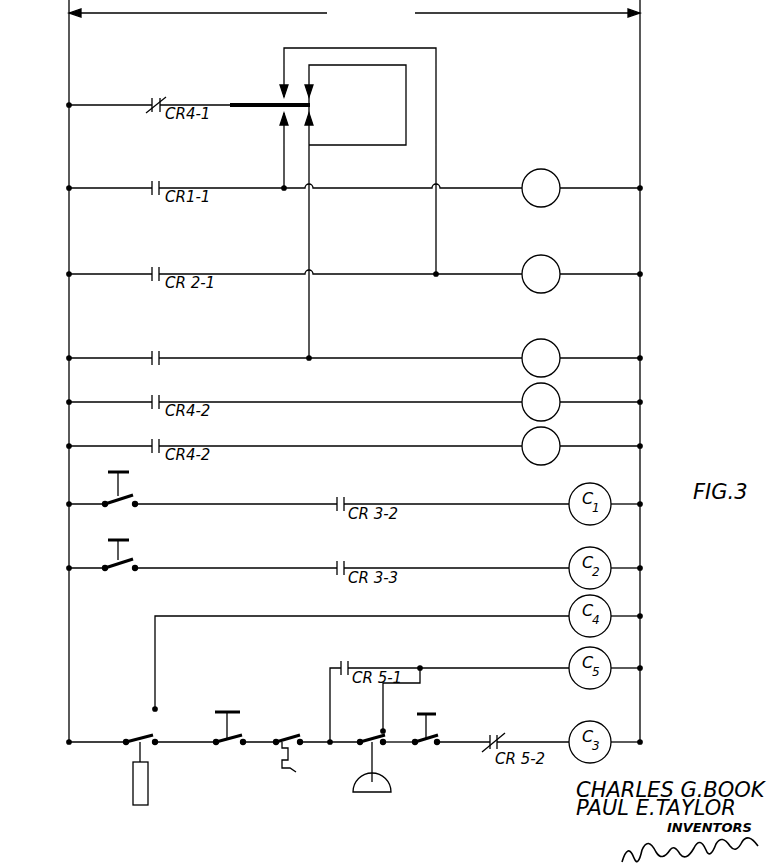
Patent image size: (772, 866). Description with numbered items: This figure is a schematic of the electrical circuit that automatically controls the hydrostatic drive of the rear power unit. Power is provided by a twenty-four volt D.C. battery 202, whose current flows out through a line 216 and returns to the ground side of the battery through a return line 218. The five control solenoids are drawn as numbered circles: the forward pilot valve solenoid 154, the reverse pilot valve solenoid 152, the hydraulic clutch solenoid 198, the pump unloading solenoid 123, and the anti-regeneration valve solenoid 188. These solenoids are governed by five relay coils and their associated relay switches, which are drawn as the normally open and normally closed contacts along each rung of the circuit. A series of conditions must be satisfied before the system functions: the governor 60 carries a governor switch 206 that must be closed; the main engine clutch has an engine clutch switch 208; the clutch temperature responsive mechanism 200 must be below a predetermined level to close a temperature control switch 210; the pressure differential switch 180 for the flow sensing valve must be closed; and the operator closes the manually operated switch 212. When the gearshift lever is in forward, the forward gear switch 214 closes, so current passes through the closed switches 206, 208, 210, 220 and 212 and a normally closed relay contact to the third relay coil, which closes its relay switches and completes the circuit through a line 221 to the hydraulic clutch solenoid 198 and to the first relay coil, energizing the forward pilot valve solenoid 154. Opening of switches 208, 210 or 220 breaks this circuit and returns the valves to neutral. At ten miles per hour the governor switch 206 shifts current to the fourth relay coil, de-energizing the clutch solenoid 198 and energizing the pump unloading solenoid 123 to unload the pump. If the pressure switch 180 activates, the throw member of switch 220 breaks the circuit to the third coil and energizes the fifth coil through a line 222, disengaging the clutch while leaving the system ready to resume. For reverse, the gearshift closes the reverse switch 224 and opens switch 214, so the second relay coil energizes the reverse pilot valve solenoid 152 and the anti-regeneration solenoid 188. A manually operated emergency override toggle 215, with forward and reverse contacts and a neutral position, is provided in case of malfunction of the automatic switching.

The 24 volt D.C. battery 202 is at (322, 18).
The emergency override two-throw toggle 215 is at (276, 108).
The line 216 is at (69, 253).
The return line 218 is at (641, 252).
The pilot valve solenoid 1 154 is at (529, 175).
The pilot valve solenoid 2 152 is at (531, 268).
The hydraulic clutch solenoid 3 198 is at (527, 351).
The pump unloading solenoid 4 123 is at (527, 399).
The anti-regeneration valve solenoid 5 188 is at (527, 443).
The line 221 is at (393, 358).
The forward gear switch 214 is at (117, 487).
The reverse switch 224 is at (116, 550).
The governor switch 206 is at (144, 736).
The governor 60 is at (133, 796).
The engine clutch switch 208 is at (223, 734).
The temperature control switch 210 is at (297, 736).
The clutch temperature responsive mechanism 200 is at (290, 766).
The pressure differential throw switch 220 is at (380, 736).
The line 222 is at (421, 683).
The pressure differential switch 180 is at (372, 777).
The manually operated switch 212 is at (426, 722).